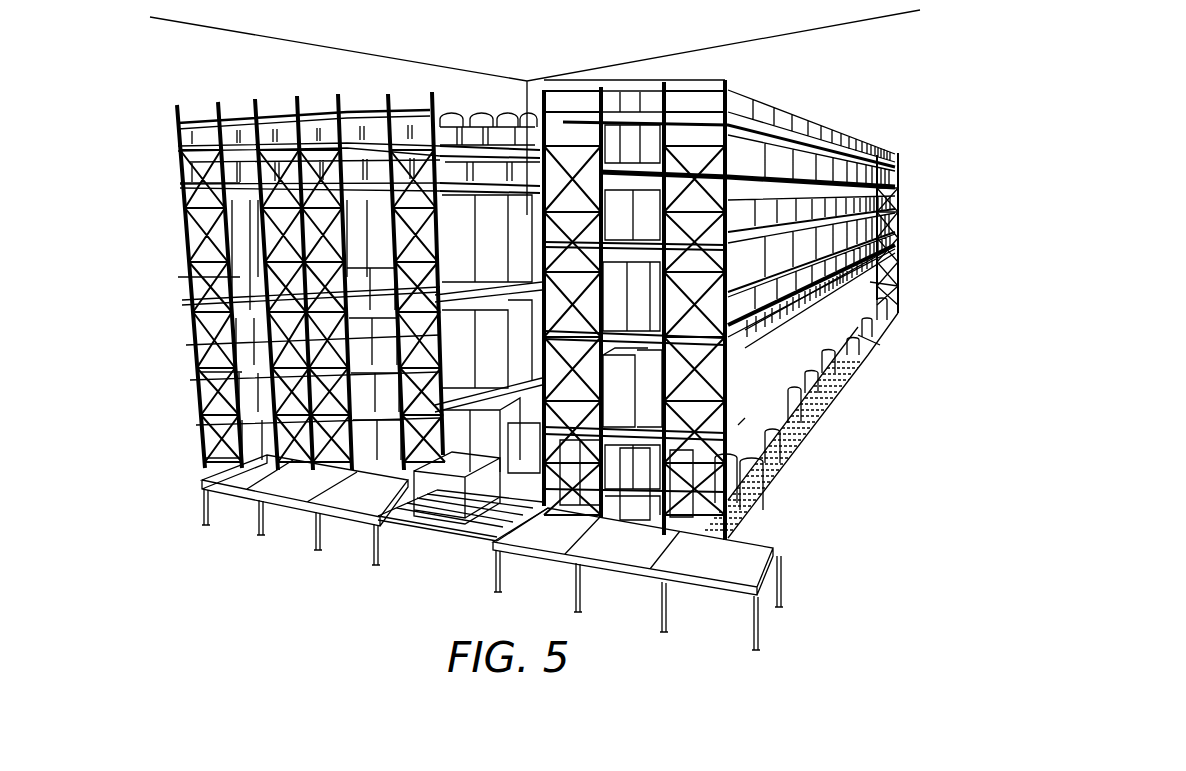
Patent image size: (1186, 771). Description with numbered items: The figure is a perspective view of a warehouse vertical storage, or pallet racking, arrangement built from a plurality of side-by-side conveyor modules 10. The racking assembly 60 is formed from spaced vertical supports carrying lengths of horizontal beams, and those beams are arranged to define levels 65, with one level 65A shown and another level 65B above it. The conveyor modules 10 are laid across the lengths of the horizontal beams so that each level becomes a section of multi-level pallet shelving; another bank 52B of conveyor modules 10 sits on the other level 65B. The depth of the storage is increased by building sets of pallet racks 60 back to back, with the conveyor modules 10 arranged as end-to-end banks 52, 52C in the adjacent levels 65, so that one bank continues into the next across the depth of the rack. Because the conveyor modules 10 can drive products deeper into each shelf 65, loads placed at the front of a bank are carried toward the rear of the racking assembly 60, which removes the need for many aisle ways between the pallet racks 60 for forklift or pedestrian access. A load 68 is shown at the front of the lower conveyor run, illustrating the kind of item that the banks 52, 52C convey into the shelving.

The conveyor module 10 is at (200, 370).
The bank 52 is at (743, 528).
The another bank 52B is at (738, 425).
The bank 52C is at (205, 468).
The racking assembly 60 is at (178, 140).
The level 65 is at (180, 183).
The one level 65A is at (870, 340).
The another level 65B is at (882, 290).
The pallet load 68 is at (442, 523).